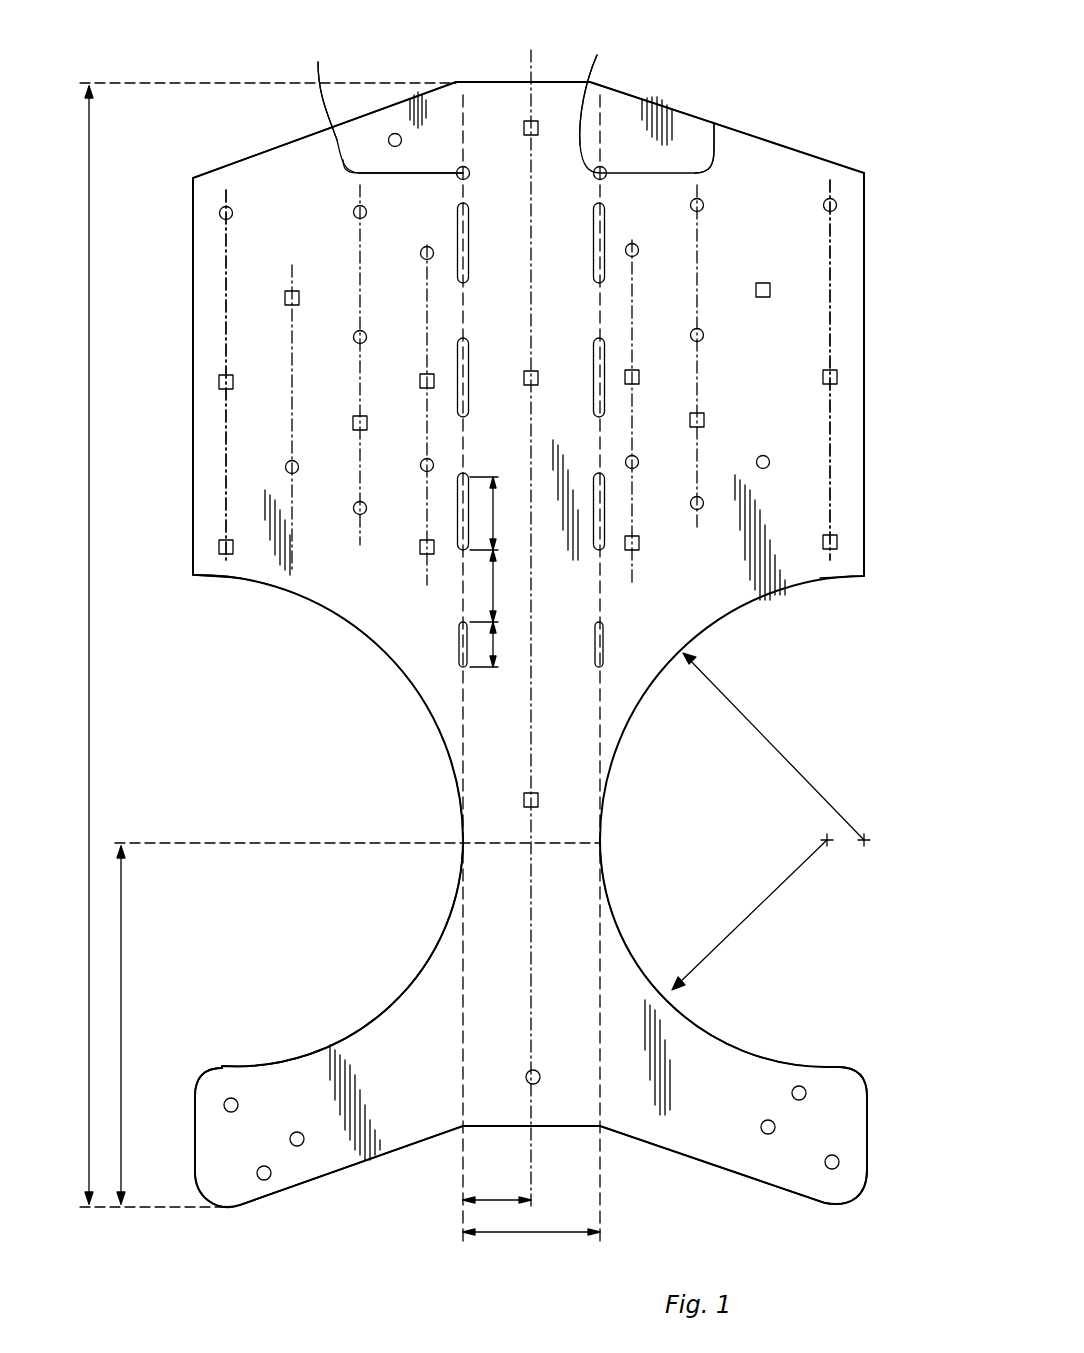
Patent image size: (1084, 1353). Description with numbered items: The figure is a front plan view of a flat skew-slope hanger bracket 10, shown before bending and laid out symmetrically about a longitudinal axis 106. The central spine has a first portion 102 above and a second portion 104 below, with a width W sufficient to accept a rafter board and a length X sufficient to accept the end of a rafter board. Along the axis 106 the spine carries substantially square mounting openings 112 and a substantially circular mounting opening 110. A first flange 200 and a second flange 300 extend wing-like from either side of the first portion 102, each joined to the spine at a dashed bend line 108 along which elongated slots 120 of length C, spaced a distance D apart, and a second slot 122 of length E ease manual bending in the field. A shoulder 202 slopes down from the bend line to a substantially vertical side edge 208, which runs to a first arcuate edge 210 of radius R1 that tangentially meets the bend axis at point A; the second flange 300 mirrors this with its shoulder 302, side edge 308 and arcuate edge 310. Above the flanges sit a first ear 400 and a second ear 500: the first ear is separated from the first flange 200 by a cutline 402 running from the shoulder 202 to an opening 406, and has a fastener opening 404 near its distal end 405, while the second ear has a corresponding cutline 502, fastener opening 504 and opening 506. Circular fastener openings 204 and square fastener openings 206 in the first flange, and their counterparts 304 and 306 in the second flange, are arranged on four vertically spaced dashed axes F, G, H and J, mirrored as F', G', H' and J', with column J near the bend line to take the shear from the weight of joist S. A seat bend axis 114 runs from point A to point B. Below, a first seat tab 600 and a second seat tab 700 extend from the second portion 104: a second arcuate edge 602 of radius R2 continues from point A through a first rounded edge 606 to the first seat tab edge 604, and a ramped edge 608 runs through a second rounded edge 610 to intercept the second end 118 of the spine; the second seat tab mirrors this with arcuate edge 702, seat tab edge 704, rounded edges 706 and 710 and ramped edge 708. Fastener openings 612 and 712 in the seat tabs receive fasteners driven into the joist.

The skew-slope hanger bracket 10 is at (680, 88).
The first portion of spine 102 is at (485, 740).
The second portion of spine 104 is at (483, 917).
The longitudinal axis 106 is at (531, 55).
The bend line 108 is at (462, 105).
The mounting opening 110 is at (540, 1082).
The mounting openings 112 is at (530, 135).
The seat bend axis 114 is at (487, 843).
The second end of spine 118 is at (583, 1128).
The elongated slots 120 is at (457, 232).
The second slot 122 is at (459, 640).
The first flange 200 is at (214, 294).
The shoulder 202 is at (330, 158).
The first plurality of fastener openings 204 is at (219, 214).
The second plurality of fastener openings 206 is at (219, 382).
The side edge 208 is at (193, 500).
The first arcuate edge 210 is at (242, 582).
The second flange 300 is at (846, 401).
The shoulder of second flange 302 is at (790, 146).
The fastener openings of second flange 304 is at (837, 205).
The fastener openings of second flange 306 is at (837, 377).
The side edge of second flange 308 is at (866, 320).
The arcuate edge of second flange 310 is at (790, 582).
The first ear 400 is at (348, 157).
The cutline 402 is at (348, 176).
The fastener opening 404 is at (401, 142).
The distal end 405 is at (330, 85).
The opening 406 is at (470, 168).
The second ear 500 is at (712, 127).
The cutline of second ear 502 is at (713, 165).
The fastener opening of second ear 504 is at (638, 186).
The opening of second ear 506 is at (598, 85).
The first seat tab 600 is at (222, 1210).
The second arcuate edge 602 is at (410, 980).
The first seat tab edge 604 is at (195, 1135).
The first rounded edge 606 is at (210, 1075).
The ramped edge 608 is at (352, 1168).
The second rounded edge 610 is at (236, 1210).
The fastener openings 612 is at (224, 1107).
The second seat tab 700 is at (858, 1118).
The arcuate edge of second seat tab 702 is at (638, 950).
The second seat tab edge 704 is at (868, 1145).
The rounded edge of second seat tab 706 is at (858, 1075).
The ramped edge of second seat tab 708 is at (770, 1185).
The rounded edge of second seat tab 710 is at (858, 1190).
The fastener openings 712 is at (768, 1120).
The point A is at (463, 843).
The point B is at (598, 846).
The slot length C is at (497, 515).
The slot spacing D is at (497, 580).
The second slot length E is at (497, 640).
The fastener axis F is at (245, 375).
The fastener axis G is at (308, 417).
The fastener axis H is at (374, 365).
The fastener axis J is at (412, 415).
The fastener axis F' is at (813, 370).
The fastener axis G' is at (746, 376).
The fastener axis H' is at (677, 357).
The fastener axis J' is at (648, 412).
The first radial dimension R1 is at (780, 745).
The second radial dimension R2 is at (750, 955).
The joist S is at (124, 964).
The spine width W is at (531, 1232).
The spine length X is at (98, 683).